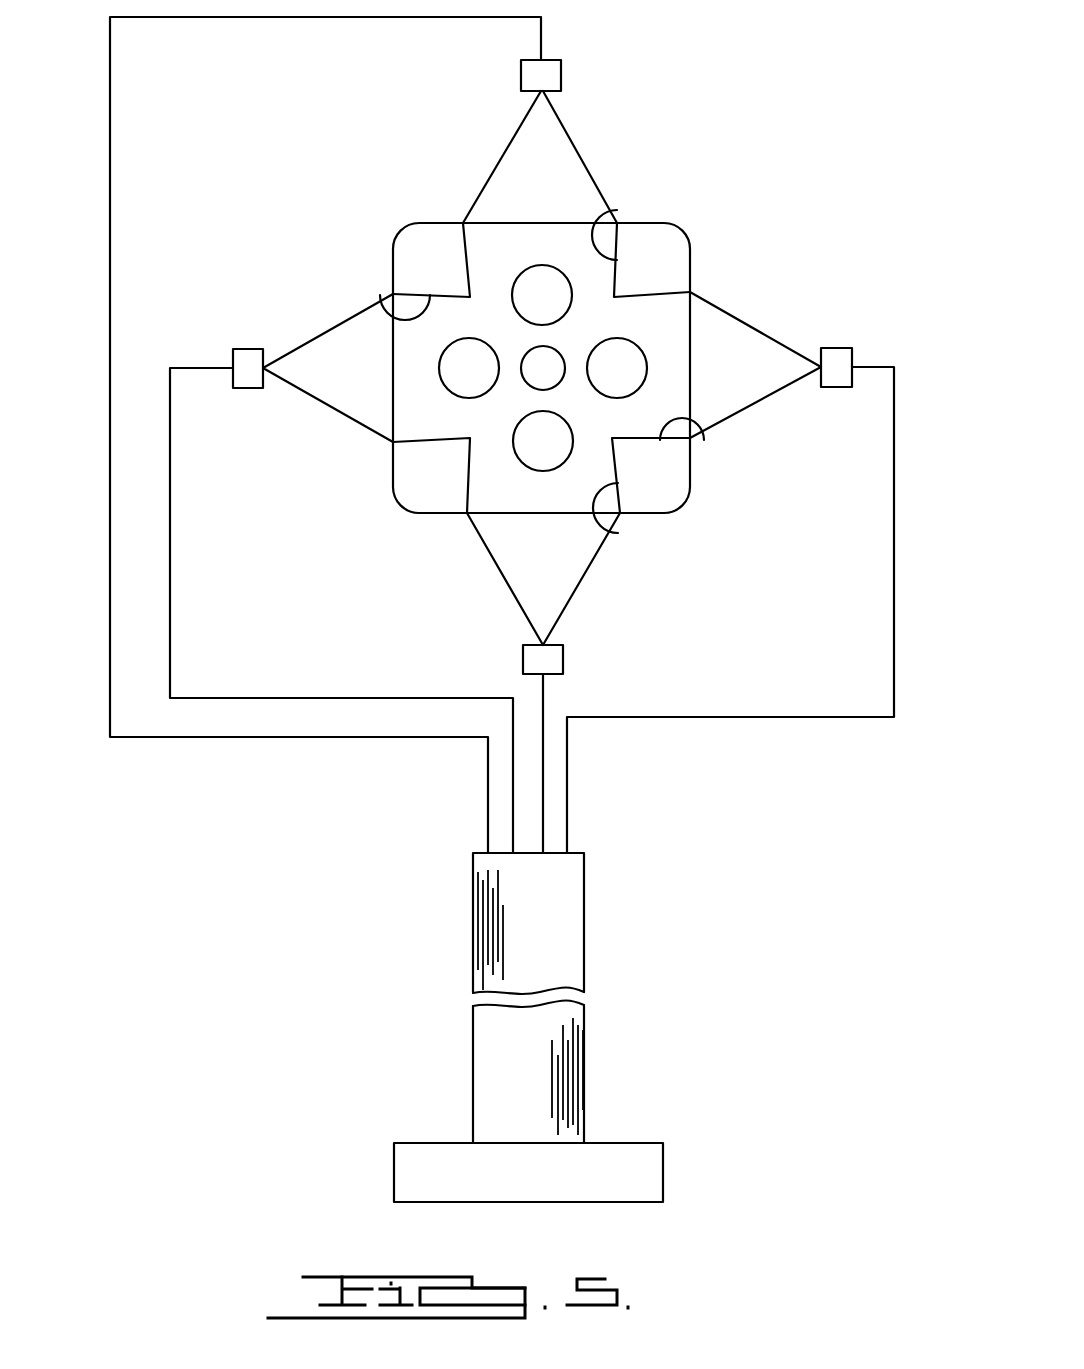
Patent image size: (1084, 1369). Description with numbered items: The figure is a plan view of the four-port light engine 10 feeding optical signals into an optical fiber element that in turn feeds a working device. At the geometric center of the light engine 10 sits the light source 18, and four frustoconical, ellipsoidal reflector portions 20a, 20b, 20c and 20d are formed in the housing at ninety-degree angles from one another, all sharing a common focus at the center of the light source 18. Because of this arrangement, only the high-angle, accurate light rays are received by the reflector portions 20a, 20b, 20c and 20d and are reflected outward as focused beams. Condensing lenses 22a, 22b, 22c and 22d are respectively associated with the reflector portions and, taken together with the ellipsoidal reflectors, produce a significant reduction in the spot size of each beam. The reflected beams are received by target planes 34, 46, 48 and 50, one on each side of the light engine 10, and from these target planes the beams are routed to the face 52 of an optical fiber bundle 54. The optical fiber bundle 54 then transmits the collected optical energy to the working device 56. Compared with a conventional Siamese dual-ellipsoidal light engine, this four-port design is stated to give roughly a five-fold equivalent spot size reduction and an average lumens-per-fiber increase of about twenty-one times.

The light engine 10 is at (764, 198).
The light source 18 is at (537, 363).
The reflector portion 20a is at (595, 520).
The reflector portion 20b is at (702, 432).
The reflector portion 20c is at (610, 206).
The reflector portion 20d is at (390, 318).
The condensing lens 22a is at (541, 456).
The condensing lens 22b is at (633, 372).
The condensing lens 22c is at (536, 283).
The condensing lens 22d is at (447, 368).
The target plane 34 is at (838, 358).
The target plane 46 is at (550, 77).
The target plane 48 is at (248, 358).
The target plane 50 is at (536, 663).
The face 52 is at (572, 848).
The optical fiber bundle 54 is at (561, 933).
The working device 56 is at (648, 1172).